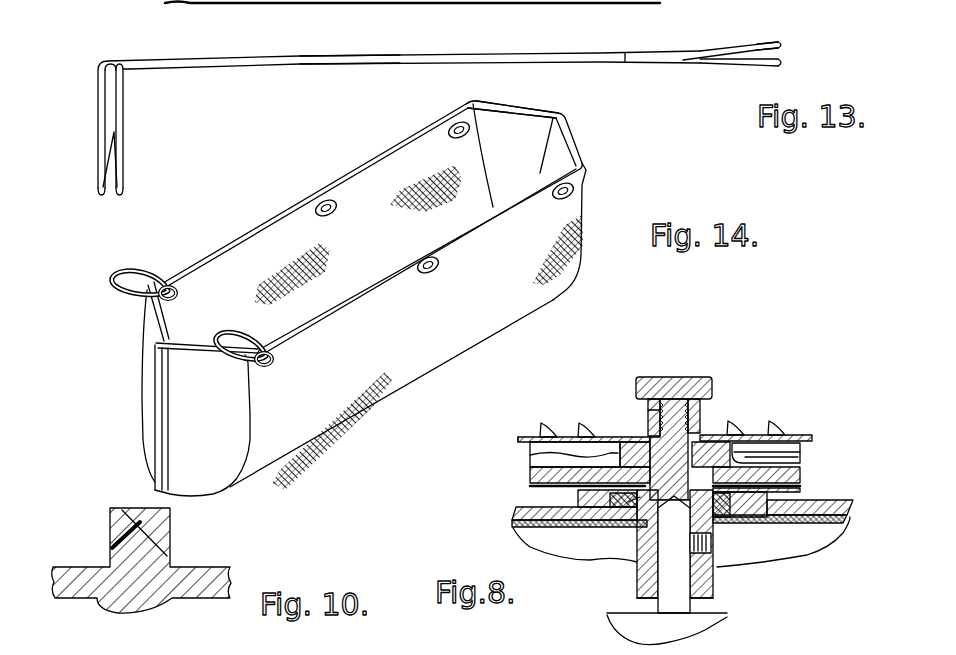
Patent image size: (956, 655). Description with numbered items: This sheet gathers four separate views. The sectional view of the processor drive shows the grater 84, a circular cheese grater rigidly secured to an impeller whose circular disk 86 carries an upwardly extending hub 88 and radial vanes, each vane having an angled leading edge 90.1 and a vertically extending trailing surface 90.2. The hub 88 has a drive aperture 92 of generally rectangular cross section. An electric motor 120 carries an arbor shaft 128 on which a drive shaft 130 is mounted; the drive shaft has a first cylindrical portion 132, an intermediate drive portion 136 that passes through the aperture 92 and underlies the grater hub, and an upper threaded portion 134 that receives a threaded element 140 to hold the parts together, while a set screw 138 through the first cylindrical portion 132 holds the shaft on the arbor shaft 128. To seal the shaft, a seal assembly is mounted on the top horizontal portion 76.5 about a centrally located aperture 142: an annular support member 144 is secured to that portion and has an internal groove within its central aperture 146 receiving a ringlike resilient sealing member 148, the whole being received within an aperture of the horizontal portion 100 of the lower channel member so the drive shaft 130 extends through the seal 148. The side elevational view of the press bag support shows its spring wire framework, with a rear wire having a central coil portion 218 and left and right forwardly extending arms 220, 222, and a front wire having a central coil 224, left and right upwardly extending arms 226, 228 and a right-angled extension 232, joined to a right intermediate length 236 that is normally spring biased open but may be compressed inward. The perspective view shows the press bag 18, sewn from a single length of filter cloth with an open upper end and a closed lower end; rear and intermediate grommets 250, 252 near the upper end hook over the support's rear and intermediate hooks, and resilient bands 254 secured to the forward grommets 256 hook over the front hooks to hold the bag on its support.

In FIG. 14, the press bag 18 is at (552, 300).
In FIG. 8, the top horizontal portion 76.5 is at (533, 528).
In FIG. 8, the grater 84 is at (530, 438).
In FIG. 10, the circular disk 86 is at (97, 565).
In FIG. 8, the circular disk 86 is at (537, 477).
In FIG. 8, the hub 88 is at (530, 454).
In FIG. 10, the angled leading edge 90.1 is at (150, 528).
In FIG. 8, the angled leading edge 90.1 is at (785, 448).
In FIG. 10, the vertically extending trailing surface 90.2 is at (110, 528).
In FIG. 8, the vertically extending trailing surface 90.2 is at (530, 452).
In FIG. 8, the drive aperture 92 is at (684, 430).
In FIG. 8, the horizontal portion of the lower channel member 100 is at (530, 512).
In FIG. 8, the electric motor 120 is at (710, 622).
In FIG. 8, the arbor shaft 128 is at (663, 603).
In FIG. 8, the drive shaft 130 is at (728, 578).
In FIG. 8, the first cylindrical portion 132 is at (643, 575).
In FIG. 8, the upper threaded portion 134 is at (648, 410).
In FIG. 8, the intermediate drive portion 136 is at (797, 472).
In FIG. 8, the set screw 138 is at (712, 539).
In FIG. 8, the threaded element 140 is at (703, 373).
In FIG. 8, the centrally located aperture 142 is at (640, 530).
In FIG. 8, the annular support member 144 is at (770, 493).
In FIG. 8, the central aperture 146 is at (693, 466).
In FIG. 8, the ringlike resilient sealing member 148 is at (684, 512).
In FIG. 13, the central coil portion 218 is at (757, 40).
In FIG. 13, the left outwardly and forwardly extending arm 220 is at (707, 65).
In FIG. 13, the right outwardly and forwardly extending arm 222 is at (714, 24).
In FIG. 13, the central coil 224 is at (122, 155).
In FIG. 13, the left upwardly extending arm 226 is at (98, 107).
In FIG. 13, the right upwardly extending arm 228 is at (125, 108).
In FIG. 13, the right extension 232 is at (180, 82).
In FIG. 13, the right intermediate length 236 is at (288, 70).
In FIG. 14, the rear grommets 250 is at (577, 187).
In FIG. 14, the intermediate grommets 252 is at (438, 255).
In FIG. 14, the resilient bands 254 is at (174, 225).
In FIG. 14, the forward grommets 256 is at (158, 306).